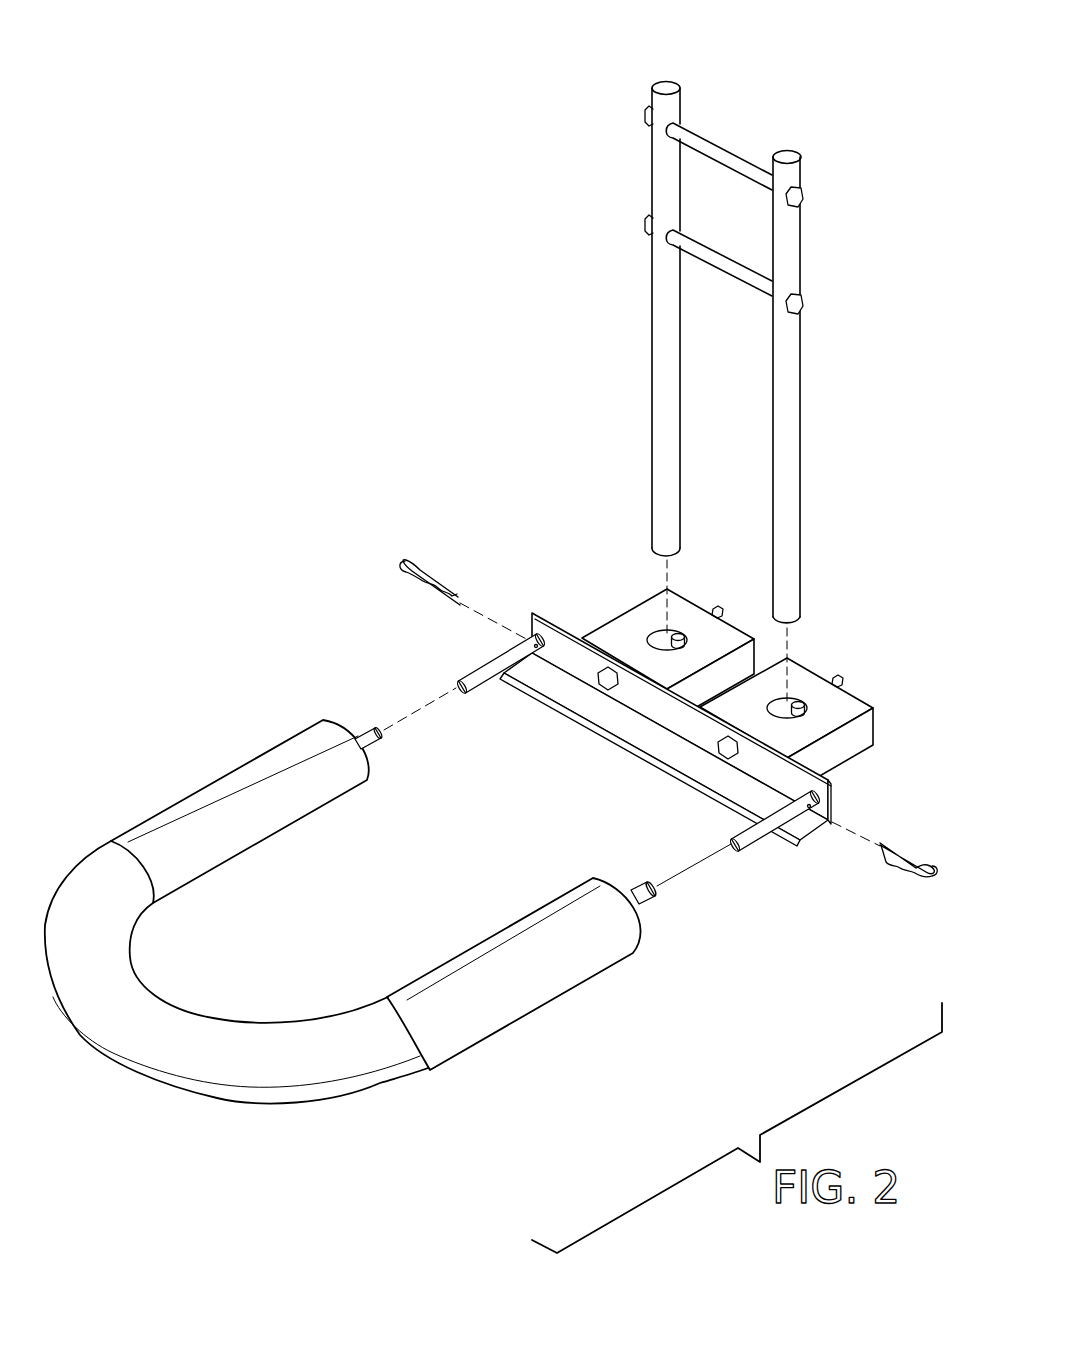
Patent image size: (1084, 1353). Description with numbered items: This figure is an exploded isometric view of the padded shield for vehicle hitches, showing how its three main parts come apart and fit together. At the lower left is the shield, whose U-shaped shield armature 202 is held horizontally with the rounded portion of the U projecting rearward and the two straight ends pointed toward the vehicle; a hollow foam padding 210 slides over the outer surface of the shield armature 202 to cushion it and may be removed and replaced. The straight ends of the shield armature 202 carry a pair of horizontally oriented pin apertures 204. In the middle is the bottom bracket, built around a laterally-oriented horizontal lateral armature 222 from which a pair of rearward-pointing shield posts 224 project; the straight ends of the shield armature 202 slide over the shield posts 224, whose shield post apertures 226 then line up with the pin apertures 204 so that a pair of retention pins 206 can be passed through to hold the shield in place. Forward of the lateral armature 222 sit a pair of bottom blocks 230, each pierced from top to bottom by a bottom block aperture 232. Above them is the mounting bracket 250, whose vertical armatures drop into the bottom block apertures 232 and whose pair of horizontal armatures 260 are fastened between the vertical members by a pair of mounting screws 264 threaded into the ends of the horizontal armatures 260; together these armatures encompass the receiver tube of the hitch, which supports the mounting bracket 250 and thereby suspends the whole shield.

The shield armature 202 is at (372, 730).
The pin apertures 204 is at (367, 745).
The retention pins 206 is at (403, 562).
The padding 210 is at (260, 1103).
The lateral armature 222 is at (637, 742).
The shield posts 224 is at (482, 680).
The shield post apertures 226 is at (535, 648).
The bottom blocks 230 is at (623, 612).
The bottom block aperture 232 is at (676, 636).
The mounting bracket 250 is at (670, 88).
The horizontal armatures 260 is at (715, 256).
The mounting screws 264 is at (803, 200).